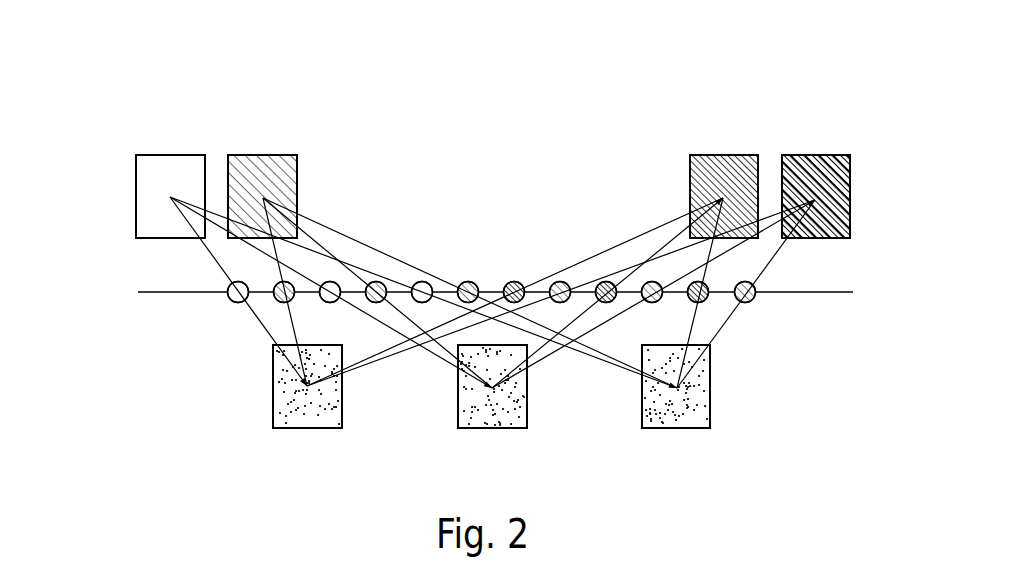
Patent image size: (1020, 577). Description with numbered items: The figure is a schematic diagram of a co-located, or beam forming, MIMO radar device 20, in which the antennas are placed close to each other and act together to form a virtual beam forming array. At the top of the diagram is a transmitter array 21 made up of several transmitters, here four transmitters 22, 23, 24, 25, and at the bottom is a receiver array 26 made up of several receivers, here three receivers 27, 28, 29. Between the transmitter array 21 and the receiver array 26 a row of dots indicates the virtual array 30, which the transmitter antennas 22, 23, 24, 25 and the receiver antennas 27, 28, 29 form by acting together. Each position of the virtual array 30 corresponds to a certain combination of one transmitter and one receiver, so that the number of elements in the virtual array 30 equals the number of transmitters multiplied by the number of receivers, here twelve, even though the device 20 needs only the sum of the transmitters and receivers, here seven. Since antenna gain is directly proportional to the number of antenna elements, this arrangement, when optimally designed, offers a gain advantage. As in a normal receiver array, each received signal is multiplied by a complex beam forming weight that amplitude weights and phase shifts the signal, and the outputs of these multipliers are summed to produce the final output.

The co-located MIMO device 20 is at (812, 62).
The transmitter array 21 is at (120, 190).
The transmitter 22 is at (170, 153).
The transmitter 23 is at (264, 153).
The transmitter 24 is at (724, 153).
The transmitter 25 is at (816, 153).
The receiver array 26 is at (120, 387).
The receiver 27 is at (308, 430).
The receiver 28 is at (490, 430).
The receiver 29 is at (678, 430).
The virtual array 30 is at (120, 292).